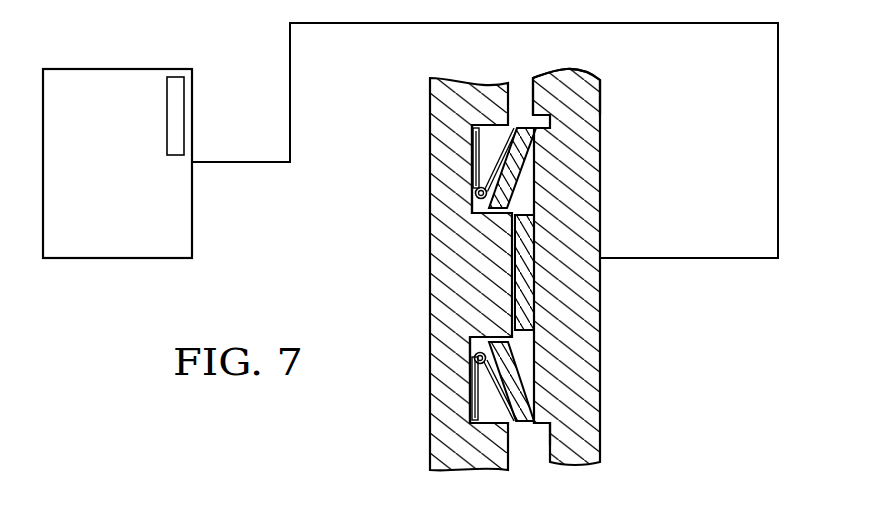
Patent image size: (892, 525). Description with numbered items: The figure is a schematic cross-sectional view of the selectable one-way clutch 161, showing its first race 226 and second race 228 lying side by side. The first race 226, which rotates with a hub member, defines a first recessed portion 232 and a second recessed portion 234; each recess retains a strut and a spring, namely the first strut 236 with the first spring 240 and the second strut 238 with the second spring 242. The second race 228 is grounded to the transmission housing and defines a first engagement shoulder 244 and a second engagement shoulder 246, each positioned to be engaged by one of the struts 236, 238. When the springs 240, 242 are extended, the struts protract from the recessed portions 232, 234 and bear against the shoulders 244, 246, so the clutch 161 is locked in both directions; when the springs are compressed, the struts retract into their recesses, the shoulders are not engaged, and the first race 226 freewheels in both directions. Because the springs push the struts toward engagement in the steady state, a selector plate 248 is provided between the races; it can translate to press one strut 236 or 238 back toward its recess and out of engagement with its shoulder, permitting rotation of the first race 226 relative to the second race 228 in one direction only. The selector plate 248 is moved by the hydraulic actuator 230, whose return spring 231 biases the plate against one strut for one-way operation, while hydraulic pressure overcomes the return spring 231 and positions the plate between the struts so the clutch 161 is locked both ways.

The selectable one-way clutch 161 is at (715, 330).
The first race 226 is at (436, 428).
The second race 228 is at (590, 101).
The hydraulic actuator 230 is at (193, 200).
The return spring 231 is at (186, 115).
The first recessed portion 232 is at (470, 202).
The second recessed portion 234 is at (468, 346).
The first strut 236 is at (535, 153).
The second strut 238 is at (533, 395).
The first spring 240 is at (484, 159).
The second spring 242 is at (484, 392).
The first engagement shoulder 244 is at (536, 110).
The second engagement shoulder 246 is at (533, 392).
The selector plate 248 is at (528, 238).